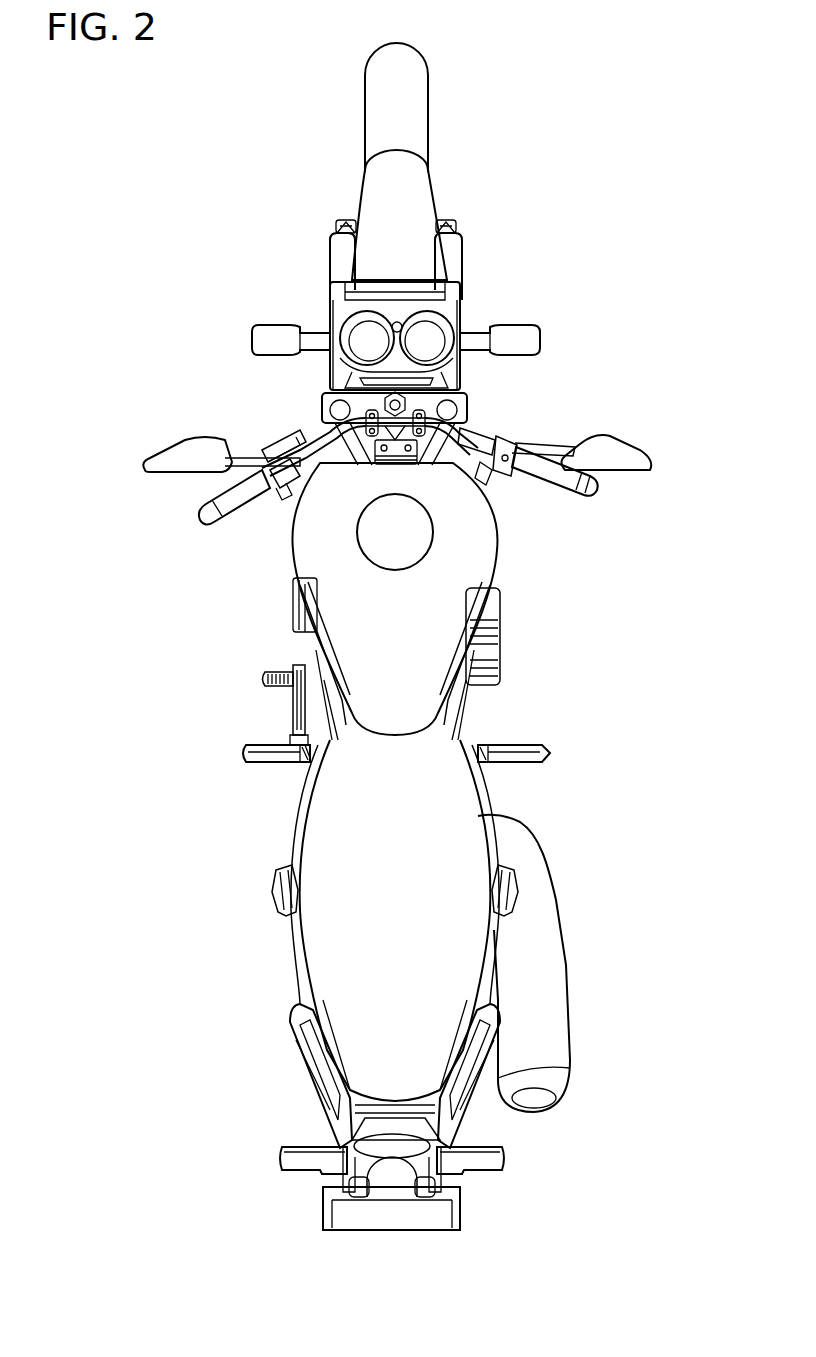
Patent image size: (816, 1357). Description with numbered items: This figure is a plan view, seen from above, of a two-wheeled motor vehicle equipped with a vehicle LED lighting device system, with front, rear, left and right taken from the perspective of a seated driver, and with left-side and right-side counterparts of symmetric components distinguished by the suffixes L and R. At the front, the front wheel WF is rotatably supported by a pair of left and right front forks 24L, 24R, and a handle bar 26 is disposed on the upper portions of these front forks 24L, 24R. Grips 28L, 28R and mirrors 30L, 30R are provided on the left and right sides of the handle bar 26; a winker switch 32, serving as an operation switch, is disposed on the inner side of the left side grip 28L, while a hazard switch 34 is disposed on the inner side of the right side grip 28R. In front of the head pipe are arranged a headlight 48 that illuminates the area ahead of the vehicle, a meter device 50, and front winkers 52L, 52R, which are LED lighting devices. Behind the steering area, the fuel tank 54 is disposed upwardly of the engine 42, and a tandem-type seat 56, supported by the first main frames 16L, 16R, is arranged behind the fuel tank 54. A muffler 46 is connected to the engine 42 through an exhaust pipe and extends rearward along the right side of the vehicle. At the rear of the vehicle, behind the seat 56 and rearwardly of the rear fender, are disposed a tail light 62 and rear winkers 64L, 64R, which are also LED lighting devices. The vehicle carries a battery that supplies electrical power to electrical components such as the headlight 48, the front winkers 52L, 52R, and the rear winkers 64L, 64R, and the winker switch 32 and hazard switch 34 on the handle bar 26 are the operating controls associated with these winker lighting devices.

The front wheel WF is at (412, 111).
The left front fork 24L is at (338, 254).
The right front fork 24R is at (452, 254).
The headlight 48 is at (440, 289).
The meter device 50 is at (445, 366).
The left front winker 52L is at (267, 330).
The right front winker 52R is at (522, 330).
The handle bar 26 is at (322, 436).
The left first main frame 16L is at (348, 468).
The right first main frame 16R is at (440, 468).
The winker switch 32 is at (288, 500).
The hazard switch 34 is at (502, 478).
The left grip 28L is at (232, 507).
The right grip 28R is at (570, 485).
The left mirror 30L is at (177, 456).
The right mirror 30R is at (612, 453).
The fuel tank 54 is at (472, 577).
The engine 42 is at (478, 655).
The tandem-type seat 56 is at (447, 845).
The muffler 46 is at (545, 997).
The tail light 62 is at (405, 1129).
The left rear winker 64L is at (290, 1172).
The right rear winker 64R is at (492, 1172).